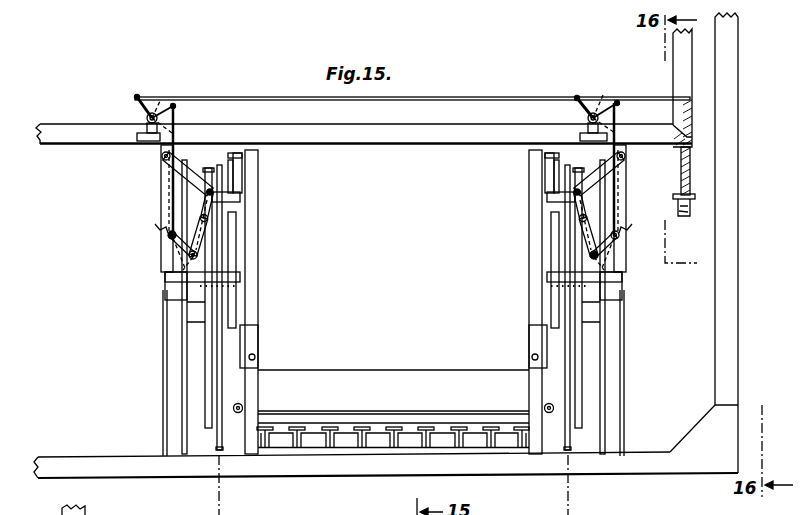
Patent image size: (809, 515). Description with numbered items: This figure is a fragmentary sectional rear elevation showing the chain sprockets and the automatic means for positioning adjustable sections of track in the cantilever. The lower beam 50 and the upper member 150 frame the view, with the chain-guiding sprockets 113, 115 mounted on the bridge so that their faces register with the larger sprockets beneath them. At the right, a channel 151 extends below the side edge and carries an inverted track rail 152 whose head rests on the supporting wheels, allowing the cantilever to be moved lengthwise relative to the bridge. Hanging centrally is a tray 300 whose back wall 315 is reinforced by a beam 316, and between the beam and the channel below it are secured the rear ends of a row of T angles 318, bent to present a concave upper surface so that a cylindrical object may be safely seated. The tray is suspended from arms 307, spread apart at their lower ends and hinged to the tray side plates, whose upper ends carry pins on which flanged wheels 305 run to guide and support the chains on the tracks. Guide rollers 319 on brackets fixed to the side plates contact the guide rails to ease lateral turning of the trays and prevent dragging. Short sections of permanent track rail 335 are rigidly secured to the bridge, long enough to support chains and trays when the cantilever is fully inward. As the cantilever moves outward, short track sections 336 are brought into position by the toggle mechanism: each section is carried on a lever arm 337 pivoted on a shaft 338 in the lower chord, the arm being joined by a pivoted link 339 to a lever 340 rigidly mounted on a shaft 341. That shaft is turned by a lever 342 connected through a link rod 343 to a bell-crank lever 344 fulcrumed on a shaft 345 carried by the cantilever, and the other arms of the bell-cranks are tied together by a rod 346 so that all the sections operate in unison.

The base beam 50 is at (93, 468).
The sprocket 113 is at (218, 340).
The sprocket 115 is at (570, 357).
The top plate 150 is at (404, 127).
The channel 151 is at (689, 168).
The inverted track rail 152 is at (695, 208).
The tray 300 is at (357, 370).
The flanged wheel 305 is at (237, 168).
The arm 307 is at (253, 190).
The back wall 315 is at (437, 385).
The beam 316 is at (367, 417).
The T angle 318 is at (457, 438).
The guide roller 319 is at (234, 406).
The permanent track rail section 335 is at (236, 237).
The track rail section 336 is at (240, 197).
The lever arm 337 is at (183, 177).
The shaft 338 is at (161, 157).
The pivoted link 339 is at (178, 204).
The lever 340 is at (198, 247).
The shaft 341 is at (168, 258).
The lever 342 is at (168, 243).
The link rod 343 is at (174, 105).
The bell-crank lever 344 is at (137, 97).
The shaft 345 is at (147, 117).
The rod 346 is at (447, 97).